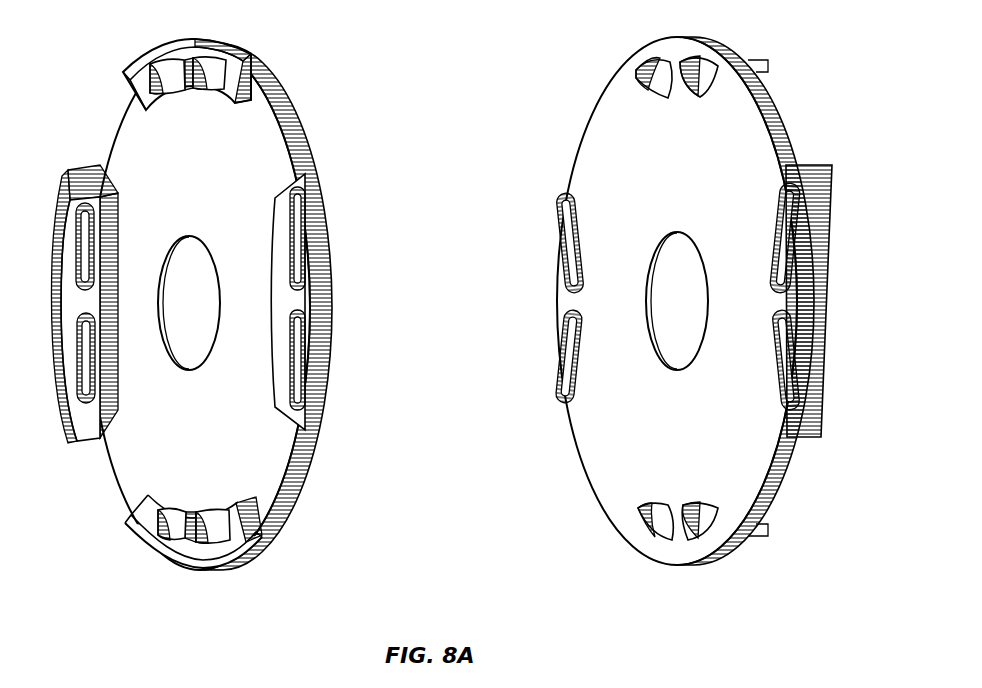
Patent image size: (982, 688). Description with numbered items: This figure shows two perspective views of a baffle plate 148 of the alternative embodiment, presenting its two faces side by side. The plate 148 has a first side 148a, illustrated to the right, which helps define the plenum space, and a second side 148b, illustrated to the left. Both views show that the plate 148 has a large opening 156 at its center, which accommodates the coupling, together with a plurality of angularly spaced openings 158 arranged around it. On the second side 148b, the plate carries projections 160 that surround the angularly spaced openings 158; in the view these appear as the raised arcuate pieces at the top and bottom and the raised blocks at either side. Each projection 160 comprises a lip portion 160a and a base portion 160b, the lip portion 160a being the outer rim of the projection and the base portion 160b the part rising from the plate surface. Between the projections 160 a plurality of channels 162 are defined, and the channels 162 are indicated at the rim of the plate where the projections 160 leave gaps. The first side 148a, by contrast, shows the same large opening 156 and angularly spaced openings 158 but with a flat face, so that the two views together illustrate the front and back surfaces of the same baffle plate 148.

The plate 148 is at (106, 43).
The first side 148a is at (705, 432).
The second side 148b is at (218, 223).
The large opening 156 is at (192, 356).
The angularly spaced openings 158 is at (137, 87).
The projections 160 is at (212, 35).
The lip portion 160a is at (252, 70).
The base portion 160b is at (242, 98).
The channels 162 is at (272, 148).